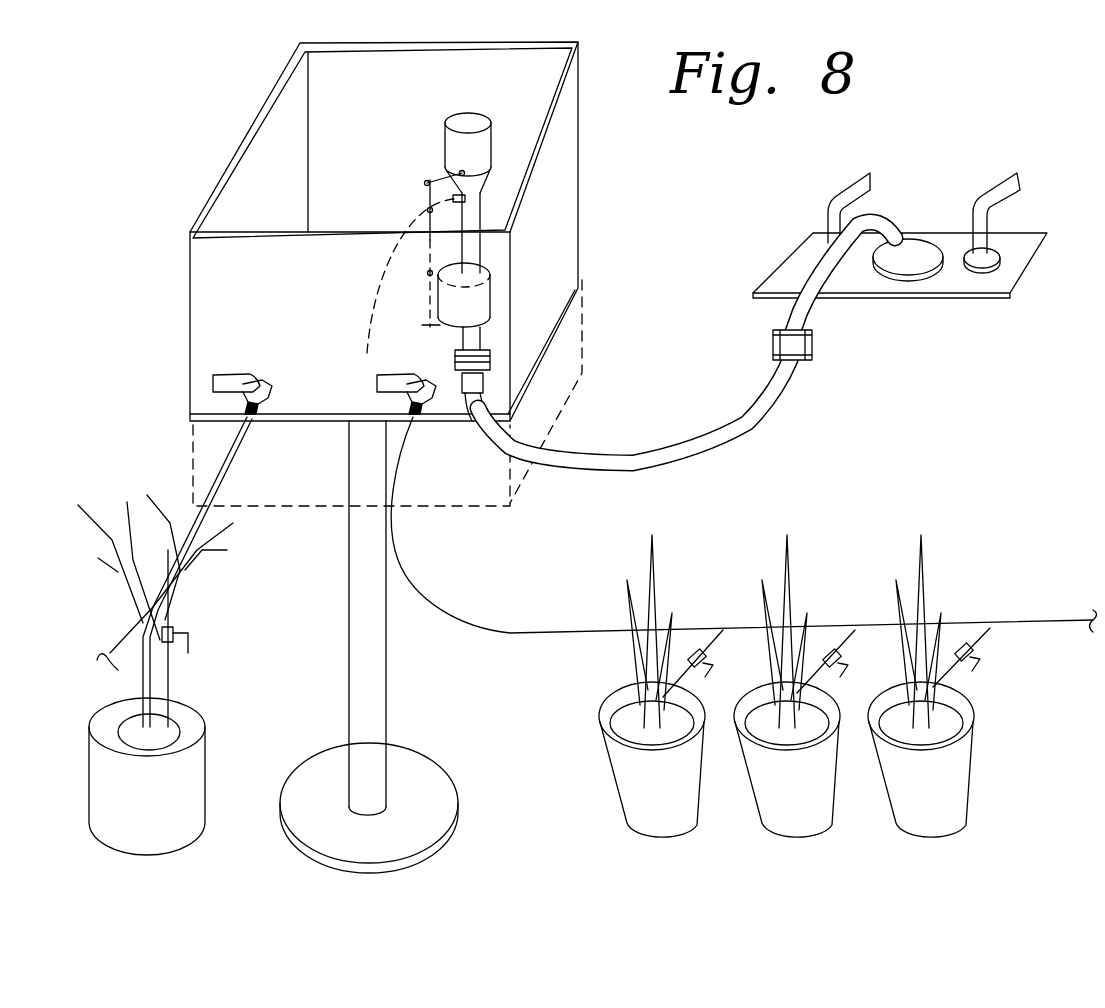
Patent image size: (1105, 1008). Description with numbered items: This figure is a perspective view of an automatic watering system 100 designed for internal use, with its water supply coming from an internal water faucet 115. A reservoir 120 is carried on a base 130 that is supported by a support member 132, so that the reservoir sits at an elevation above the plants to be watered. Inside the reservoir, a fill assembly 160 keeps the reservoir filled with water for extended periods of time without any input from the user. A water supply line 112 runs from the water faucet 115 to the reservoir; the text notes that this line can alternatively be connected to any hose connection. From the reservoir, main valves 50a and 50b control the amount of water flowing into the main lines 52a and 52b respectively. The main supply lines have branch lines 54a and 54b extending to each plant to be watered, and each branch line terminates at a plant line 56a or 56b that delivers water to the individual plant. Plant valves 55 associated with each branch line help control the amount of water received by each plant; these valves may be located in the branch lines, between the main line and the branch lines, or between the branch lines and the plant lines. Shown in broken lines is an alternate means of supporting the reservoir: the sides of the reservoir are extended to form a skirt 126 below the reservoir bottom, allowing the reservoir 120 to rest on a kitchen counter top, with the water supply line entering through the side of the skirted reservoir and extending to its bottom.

The automatic watering system 100 is at (212, 160).
The reservoir 120 is at (565, 226).
The base 130 is at (560, 320).
The skirt 126 is at (470, 490).
The fill assembly 160 is at (503, 151).
The water faucet 115 is at (830, 273).
The water supply line 112 is at (747, 423).
The support member 132 is at (376, 647).
The main valve 50a is at (267, 393).
The main valve 50b is at (430, 397).
The main line 52a is at (207, 493).
The main line 52b is at (513, 633).
The branch line 54a is at (170, 668).
The branch line 54b is at (707, 643).
The plant valve 55 is at (170, 627).
The plant line 56a is at (177, 720).
The plant line 56b is at (628, 707).